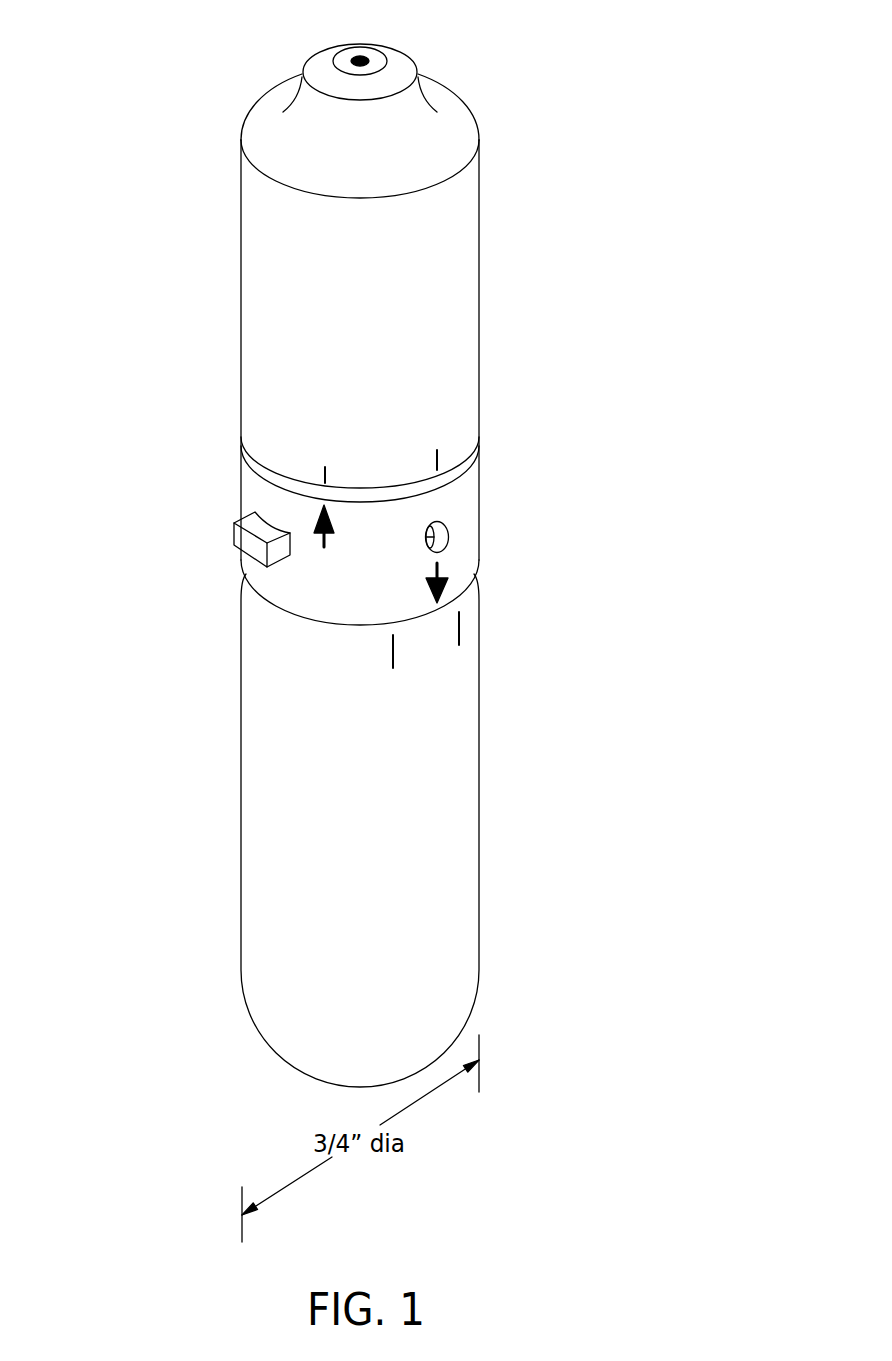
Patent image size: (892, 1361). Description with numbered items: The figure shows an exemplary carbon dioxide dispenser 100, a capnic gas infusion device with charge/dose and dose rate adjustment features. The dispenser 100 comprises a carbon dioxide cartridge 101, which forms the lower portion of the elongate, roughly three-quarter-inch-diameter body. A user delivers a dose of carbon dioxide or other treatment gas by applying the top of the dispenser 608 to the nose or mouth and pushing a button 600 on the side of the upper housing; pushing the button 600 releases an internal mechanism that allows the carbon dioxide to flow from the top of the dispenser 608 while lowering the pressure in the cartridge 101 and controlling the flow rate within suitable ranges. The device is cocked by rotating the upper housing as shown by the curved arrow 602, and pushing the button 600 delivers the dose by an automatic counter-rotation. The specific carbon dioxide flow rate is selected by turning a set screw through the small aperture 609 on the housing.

The carbon dioxide dispenser 100 is at (322, 547).
The carbon dioxide cartridge 101 is at (535, 775).
The arrow 602 is at (192, 170).
The top of the dispenser 608 is at (373, 43).
The button 600 is at (235, 545).
The aperture 609 is at (457, 527).